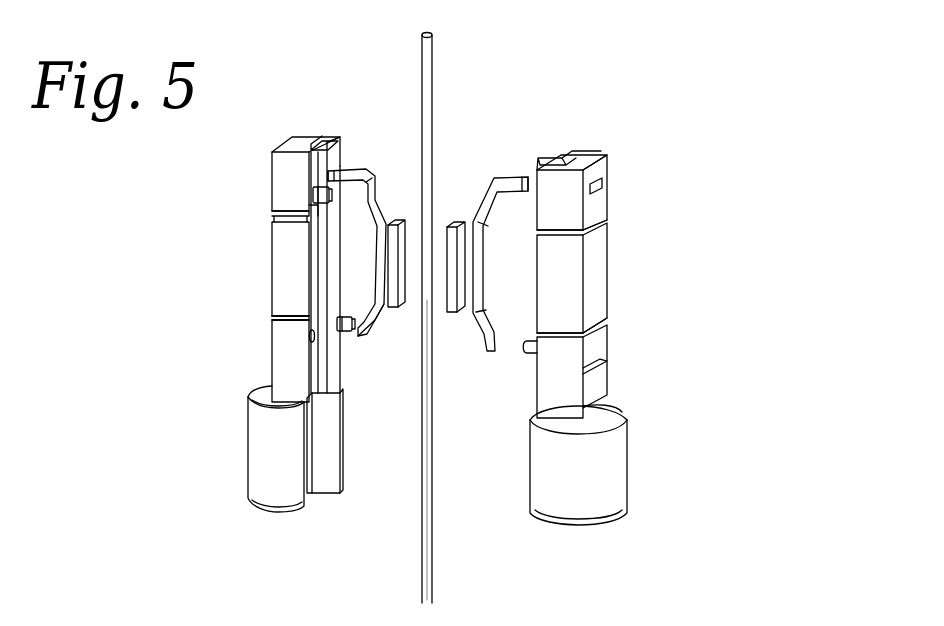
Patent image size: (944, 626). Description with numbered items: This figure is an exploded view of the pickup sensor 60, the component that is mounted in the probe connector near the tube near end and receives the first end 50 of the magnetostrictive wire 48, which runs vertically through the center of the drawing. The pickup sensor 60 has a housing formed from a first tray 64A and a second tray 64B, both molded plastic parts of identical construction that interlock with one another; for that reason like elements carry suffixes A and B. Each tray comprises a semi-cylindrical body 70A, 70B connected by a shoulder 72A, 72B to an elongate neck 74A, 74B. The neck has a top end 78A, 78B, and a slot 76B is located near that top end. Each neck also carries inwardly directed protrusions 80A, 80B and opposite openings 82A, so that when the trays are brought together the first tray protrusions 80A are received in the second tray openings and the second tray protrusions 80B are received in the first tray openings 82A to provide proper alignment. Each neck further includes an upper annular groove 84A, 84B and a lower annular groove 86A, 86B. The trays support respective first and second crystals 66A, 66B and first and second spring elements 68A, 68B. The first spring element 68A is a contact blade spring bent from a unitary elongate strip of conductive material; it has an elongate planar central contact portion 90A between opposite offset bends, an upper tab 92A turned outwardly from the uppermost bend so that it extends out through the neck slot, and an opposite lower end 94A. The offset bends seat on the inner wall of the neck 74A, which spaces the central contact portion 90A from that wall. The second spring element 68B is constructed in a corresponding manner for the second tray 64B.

The magnetostrictive wire 48 is at (426, 554).
The first end of magnetostrictive wire 50 is at (434, 38).
The pickup sensor 60 is at (638, 243).
The first tray 64A is at (280, 279).
The second tray 64B is at (592, 304).
The first crystal 66A is at (397, 222).
The second crystal 66B is at (453, 226).
The first spring element 68A is at (383, 334).
The second spring element 68B is at (489, 351).
The semi-cylindrical body 70A is at (258, 448).
The semi-cylindrical body 70B is at (608, 463).
The shoulder 72A is at (250, 386).
The shoulder 72B is at (616, 400).
The elongate neck 74A is at (278, 358).
The elongate neck 74B is at (590, 350).
The slot 76B is at (607, 184).
The top end 78A is at (294, 136).
The top end 78B is at (573, 163).
The inwardly directed protrusions 80A is at (316, 194).
The inwardly directed protrusions 80B is at (530, 354).
The openings 82A is at (308, 340).
The upper annular groove 84A is at (310, 213).
The upper annular groove 84B is at (600, 218).
The lower annular groove 86A is at (308, 318).
The lower annular groove 86B is at (590, 320).
The central contact portion 90A is at (366, 169).
The upper tab 92A is at (352, 140).
The lower end 94A is at (364, 347).